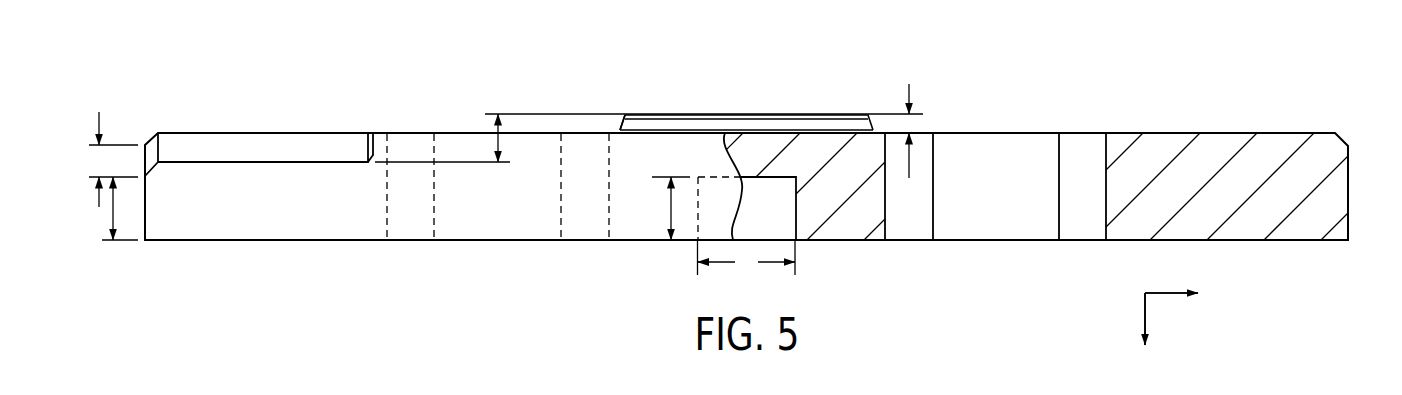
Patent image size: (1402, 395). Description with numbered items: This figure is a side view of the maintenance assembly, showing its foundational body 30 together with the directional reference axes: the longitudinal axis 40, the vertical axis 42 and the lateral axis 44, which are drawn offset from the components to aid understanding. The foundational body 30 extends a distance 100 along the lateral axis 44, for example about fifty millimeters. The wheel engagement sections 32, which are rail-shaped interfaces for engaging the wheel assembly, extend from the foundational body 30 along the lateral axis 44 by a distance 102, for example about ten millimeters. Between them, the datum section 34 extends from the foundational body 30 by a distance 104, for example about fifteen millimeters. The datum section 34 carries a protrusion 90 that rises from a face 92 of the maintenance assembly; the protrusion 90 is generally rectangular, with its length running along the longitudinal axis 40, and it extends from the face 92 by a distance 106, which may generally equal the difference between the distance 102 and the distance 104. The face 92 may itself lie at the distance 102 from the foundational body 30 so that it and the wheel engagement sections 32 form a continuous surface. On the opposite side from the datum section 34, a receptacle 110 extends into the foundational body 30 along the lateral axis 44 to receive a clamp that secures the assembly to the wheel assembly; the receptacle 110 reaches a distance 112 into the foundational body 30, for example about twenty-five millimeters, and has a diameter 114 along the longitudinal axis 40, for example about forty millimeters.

The foundational body 30 is at (266, 241).
The wheel engagement section 32 is at (279, 115).
The datum section 34 is at (800, 99).
The longitudinal axis 40 is at (1165, 293).
The vertical axis 42 is at (1145, 290).
The lateral axis 44 is at (1145, 312).
The protrusion 90 is at (747, 114).
The face 92 is at (618, 131).
The distance 100 is at (113, 210).
The distance 102 is at (99, 112).
The distance 104 is at (498, 137).
The distance 106 is at (909, 86).
The receptacle 110 is at (718, 176).
The distance 112 is at (671, 208).
The diameter 114 is at (747, 258).